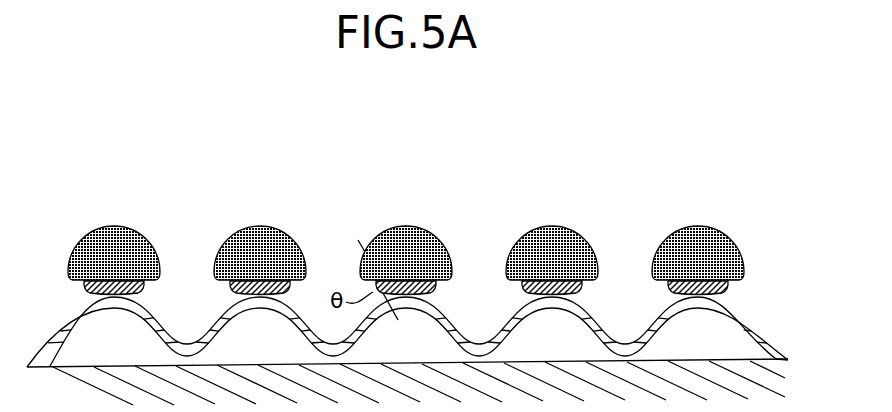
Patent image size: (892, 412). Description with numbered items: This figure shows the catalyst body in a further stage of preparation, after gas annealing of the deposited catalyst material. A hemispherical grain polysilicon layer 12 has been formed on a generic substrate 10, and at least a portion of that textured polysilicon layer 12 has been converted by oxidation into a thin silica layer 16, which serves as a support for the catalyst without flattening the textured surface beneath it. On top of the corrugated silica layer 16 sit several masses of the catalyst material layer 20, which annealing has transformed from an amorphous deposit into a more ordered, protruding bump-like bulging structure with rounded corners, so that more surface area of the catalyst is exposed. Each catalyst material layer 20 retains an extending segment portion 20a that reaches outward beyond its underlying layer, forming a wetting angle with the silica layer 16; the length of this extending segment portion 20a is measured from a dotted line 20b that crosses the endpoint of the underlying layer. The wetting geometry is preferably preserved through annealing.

The substrate 10 is at (777, 374).
The hemispherical grain polysilicon layer 12 is at (743, 345).
The silica layer 16 is at (740, 311).
The catalyst material layer 20 is at (142, 234).
The extending segment portion 20a is at (373, 284).
The dotted line 20b is at (370, 234).